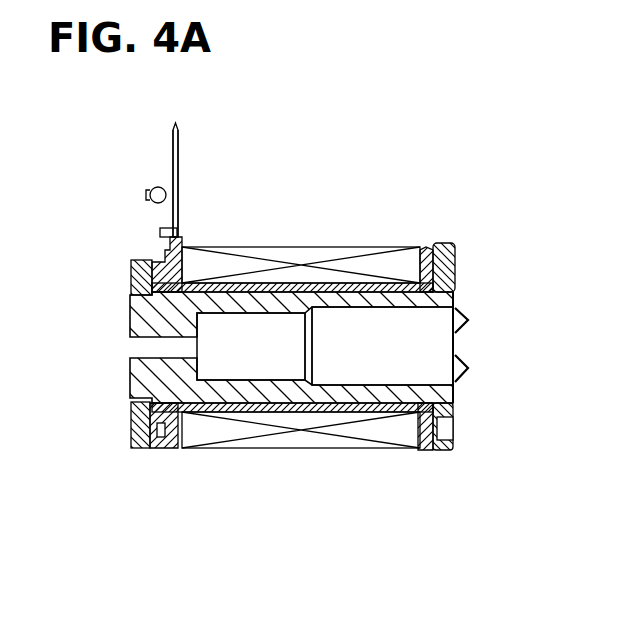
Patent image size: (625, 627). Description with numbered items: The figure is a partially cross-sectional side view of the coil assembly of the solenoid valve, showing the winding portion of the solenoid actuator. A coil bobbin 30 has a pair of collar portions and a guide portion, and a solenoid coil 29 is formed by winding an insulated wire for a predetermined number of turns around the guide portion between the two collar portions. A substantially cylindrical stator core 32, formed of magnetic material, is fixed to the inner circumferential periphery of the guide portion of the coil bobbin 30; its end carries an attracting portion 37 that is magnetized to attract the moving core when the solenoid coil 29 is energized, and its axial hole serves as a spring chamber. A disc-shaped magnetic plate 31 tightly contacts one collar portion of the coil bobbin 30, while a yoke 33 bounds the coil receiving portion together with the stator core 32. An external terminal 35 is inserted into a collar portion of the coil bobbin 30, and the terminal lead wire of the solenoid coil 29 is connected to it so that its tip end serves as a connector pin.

The solenoid coil 29 is at (297, 250).
The coil bobbin 30 is at (366, 258).
The magnetic plate 31 is at (441, 243).
The stator core 32 is at (455, 290).
The yoke 33 is at (140, 283).
The external terminal 35 is at (172, 145).
The attracting portion 37 is at (312, 318).